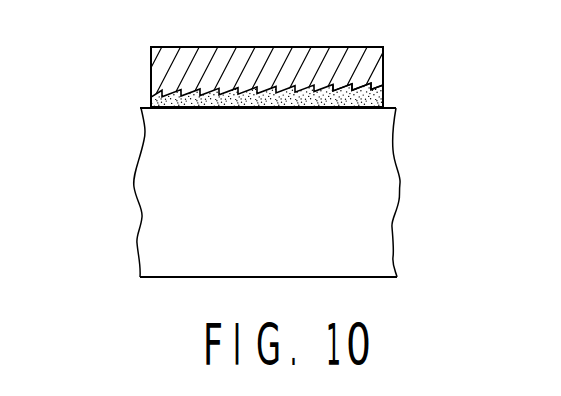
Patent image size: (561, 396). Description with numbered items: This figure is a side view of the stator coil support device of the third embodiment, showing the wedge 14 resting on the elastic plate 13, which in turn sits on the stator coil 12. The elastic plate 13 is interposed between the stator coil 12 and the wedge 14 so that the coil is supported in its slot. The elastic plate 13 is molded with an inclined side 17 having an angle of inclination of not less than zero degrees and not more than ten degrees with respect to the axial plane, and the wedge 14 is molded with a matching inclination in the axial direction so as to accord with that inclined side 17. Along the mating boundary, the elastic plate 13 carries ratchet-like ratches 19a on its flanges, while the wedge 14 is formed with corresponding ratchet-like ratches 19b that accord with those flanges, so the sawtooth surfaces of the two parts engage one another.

The stator coil 12 is at (377, 198).
The elastic plate 13 is at (243, 103).
The wedge 14 is at (276, 52).
The inclined side 17 is at (150, 100).
The ratchet-like ratches 19a is at (379, 88).
The ratchet-like ratches 19b is at (362, 85).